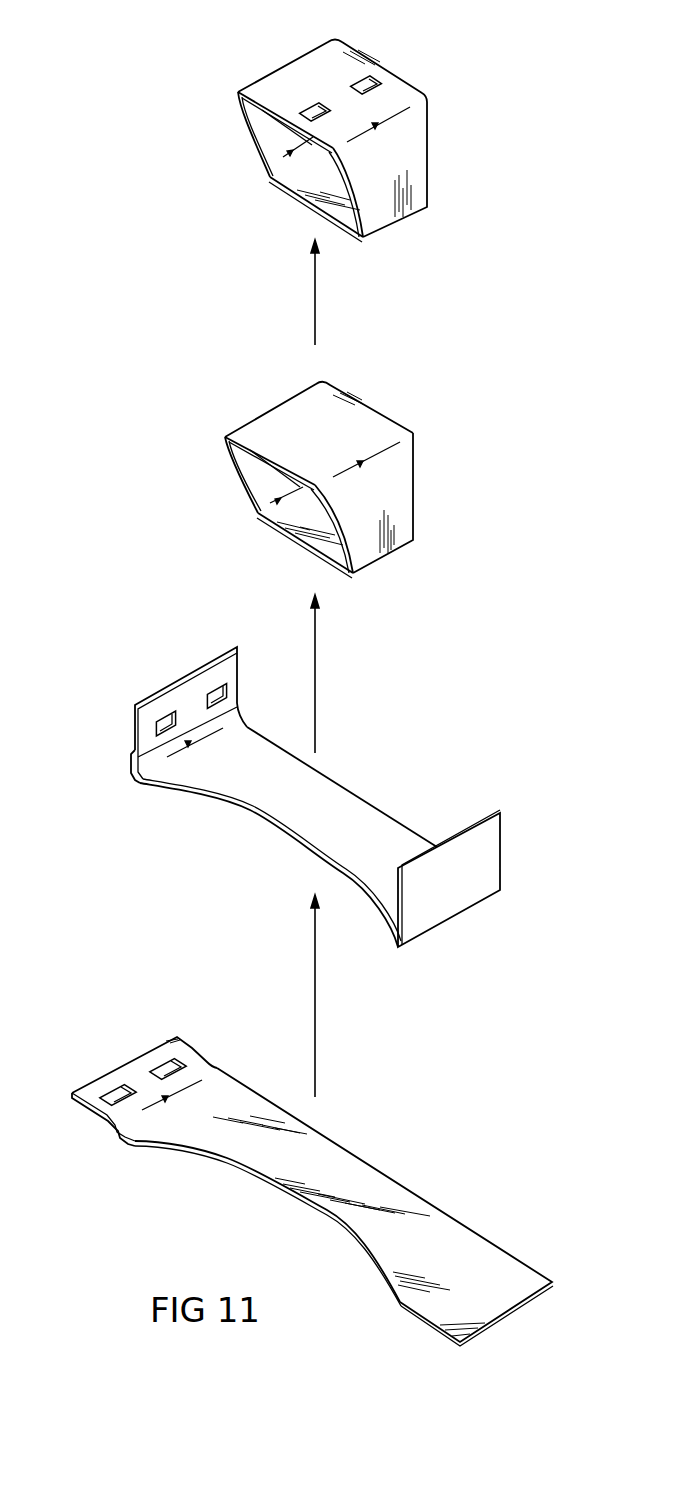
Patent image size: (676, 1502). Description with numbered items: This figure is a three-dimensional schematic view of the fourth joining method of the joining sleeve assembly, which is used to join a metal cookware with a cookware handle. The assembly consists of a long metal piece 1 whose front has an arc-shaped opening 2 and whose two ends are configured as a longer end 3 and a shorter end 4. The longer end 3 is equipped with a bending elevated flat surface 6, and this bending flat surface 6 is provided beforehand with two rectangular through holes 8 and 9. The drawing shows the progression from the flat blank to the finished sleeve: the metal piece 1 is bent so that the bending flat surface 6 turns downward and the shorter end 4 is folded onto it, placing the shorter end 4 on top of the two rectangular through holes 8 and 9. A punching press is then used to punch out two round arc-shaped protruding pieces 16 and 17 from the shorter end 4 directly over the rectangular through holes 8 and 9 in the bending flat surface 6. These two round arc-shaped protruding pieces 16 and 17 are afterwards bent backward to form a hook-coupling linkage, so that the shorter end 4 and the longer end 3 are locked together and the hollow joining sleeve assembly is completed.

The long metal piece 1 is at (363, 1175).
The arc-shaped opening 2 is at (282, 843).
The longer end 3 is at (122, 1133).
The shorter end 4 is at (513, 1260).
The bending elevated flat surface 6 is at (180, 1040).
The rectangular through hole 8 is at (117, 1097).
The rectangular through hole 9 is at (162, 1067).
The round arc-shaped protruding piece 16 is at (307, 110).
The round arc-shaped protruding piece 17 is at (362, 80).